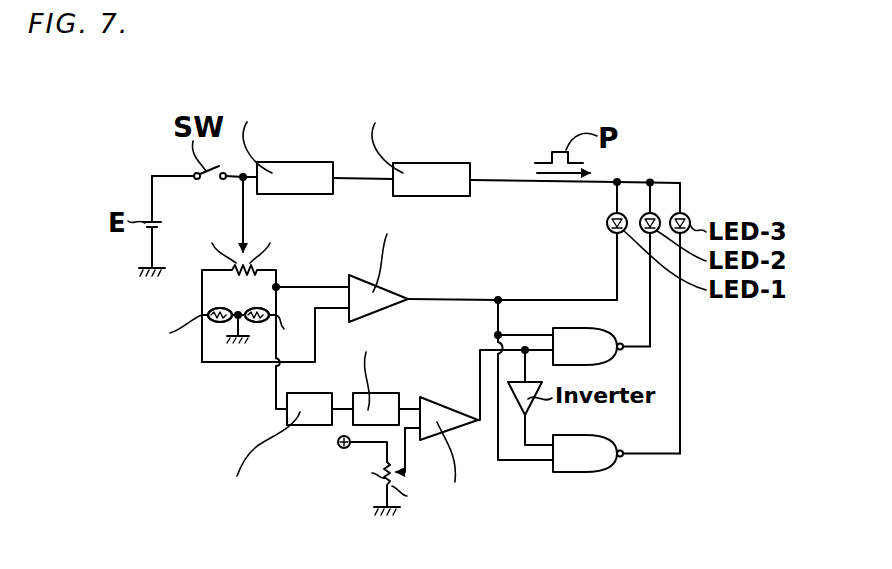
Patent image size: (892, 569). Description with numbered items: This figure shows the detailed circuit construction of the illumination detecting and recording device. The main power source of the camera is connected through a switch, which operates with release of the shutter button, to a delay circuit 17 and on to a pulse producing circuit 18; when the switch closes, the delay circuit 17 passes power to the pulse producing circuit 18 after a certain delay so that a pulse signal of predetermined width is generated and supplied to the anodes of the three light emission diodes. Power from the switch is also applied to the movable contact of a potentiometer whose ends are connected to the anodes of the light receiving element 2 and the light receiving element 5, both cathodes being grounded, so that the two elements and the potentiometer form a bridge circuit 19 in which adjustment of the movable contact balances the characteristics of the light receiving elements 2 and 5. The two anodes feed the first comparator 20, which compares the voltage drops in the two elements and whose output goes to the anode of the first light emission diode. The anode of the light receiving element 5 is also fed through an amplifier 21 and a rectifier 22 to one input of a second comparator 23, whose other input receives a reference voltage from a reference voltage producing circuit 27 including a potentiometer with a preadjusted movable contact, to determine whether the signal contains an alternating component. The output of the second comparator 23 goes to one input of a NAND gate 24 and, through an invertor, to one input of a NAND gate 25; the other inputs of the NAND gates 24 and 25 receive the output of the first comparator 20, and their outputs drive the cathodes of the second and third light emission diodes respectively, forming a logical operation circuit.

The light receiving element 2 is at (216, 322).
The light receiving element 5 is at (257, 322).
The delay circuit 17 is at (318, 163).
The pulse producing circuit 18 is at (458, 163).
The bridge circuit 19 is at (199, 297).
The first comparator 20 is at (363, 289).
The amplifier 21 is at (306, 396).
The rectifier 22 is at (384, 396).
The second comparator 23 is at (446, 400).
The NAND gate 24 is at (598, 363).
The NAND gate 25 is at (595, 438).
The reference voltage producing circuit 27 is at (345, 488).